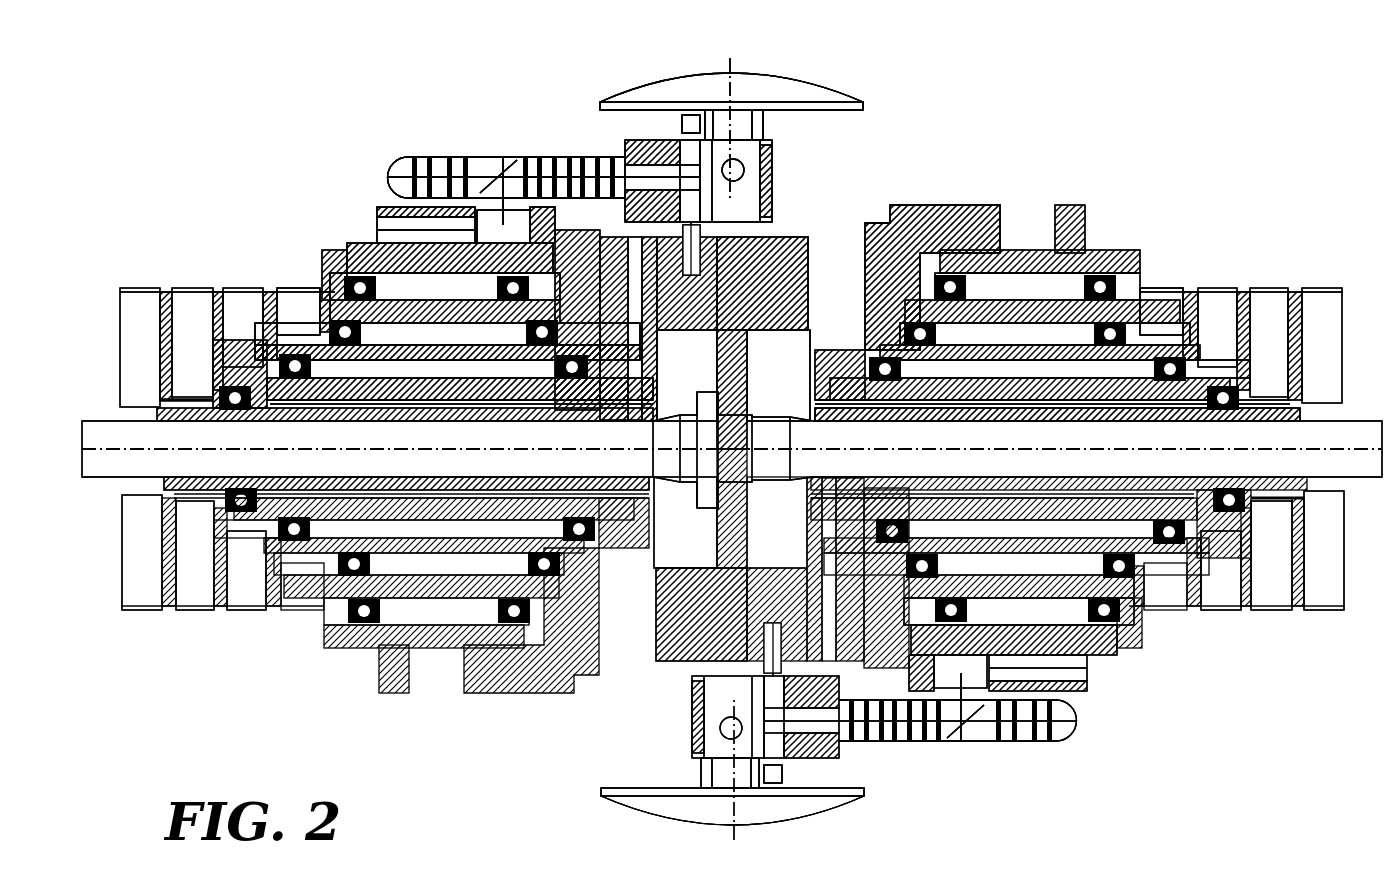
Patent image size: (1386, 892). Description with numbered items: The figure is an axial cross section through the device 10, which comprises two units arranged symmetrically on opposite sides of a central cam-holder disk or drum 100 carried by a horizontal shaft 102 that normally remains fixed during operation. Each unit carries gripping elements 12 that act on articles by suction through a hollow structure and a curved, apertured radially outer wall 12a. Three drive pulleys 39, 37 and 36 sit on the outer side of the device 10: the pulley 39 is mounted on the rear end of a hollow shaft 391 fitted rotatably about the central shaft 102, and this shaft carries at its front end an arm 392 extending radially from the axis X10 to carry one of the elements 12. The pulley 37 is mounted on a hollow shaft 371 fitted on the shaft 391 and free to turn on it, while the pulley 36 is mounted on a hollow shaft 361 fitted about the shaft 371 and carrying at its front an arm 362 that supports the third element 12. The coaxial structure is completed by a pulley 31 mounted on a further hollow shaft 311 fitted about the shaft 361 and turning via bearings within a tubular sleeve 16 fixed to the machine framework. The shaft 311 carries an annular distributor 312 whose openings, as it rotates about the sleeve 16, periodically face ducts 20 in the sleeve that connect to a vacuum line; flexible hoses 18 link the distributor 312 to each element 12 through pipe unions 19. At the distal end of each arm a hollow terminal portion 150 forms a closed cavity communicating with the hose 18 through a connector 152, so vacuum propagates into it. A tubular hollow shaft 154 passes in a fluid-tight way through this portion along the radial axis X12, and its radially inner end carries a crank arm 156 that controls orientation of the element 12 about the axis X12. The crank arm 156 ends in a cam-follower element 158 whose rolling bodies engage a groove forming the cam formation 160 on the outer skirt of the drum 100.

The device 10 is at (985, 112).
The gripping element 12 is at (815, 90).
The radially outer wall 12a is at (646, 90).
The axis X12 is at (740, 57).
The axis X10 is at (72, 445).
The tubular sleeve 16 is at (365, 245).
The flexible hose 18 is at (550, 165).
The pipe union 19 is at (492, 172).
The duct 20 is at (378, 214).
The pulley 31 is at (290, 318).
The drive pulley 36 is at (247, 593).
The drive pulley 37 is at (193, 597).
The drive pulley 39 is at (143, 597).
The cam-holder disk or drum 100 is at (795, 242).
The shaft 102 is at (1352, 477).
The hollow terminal portion 150 is at (668, 140).
The connector 152 is at (628, 150).
The hollow shaft 154 is at (760, 162).
The crank arm 156 is at (742, 225).
The cam-follower element 158 is at (790, 277).
The cam formation 160 is at (765, 575).
The hollow shaft 311 is at (410, 300).
The annular distributor 312 is at (548, 223).
The hollow shaft 361 is at (400, 357).
The arm 362 is at (922, 745).
The hollow shaft 371 is at (385, 385).
The hollow shaft 391 is at (1212, 423).
The arm 392 is at (657, 380).